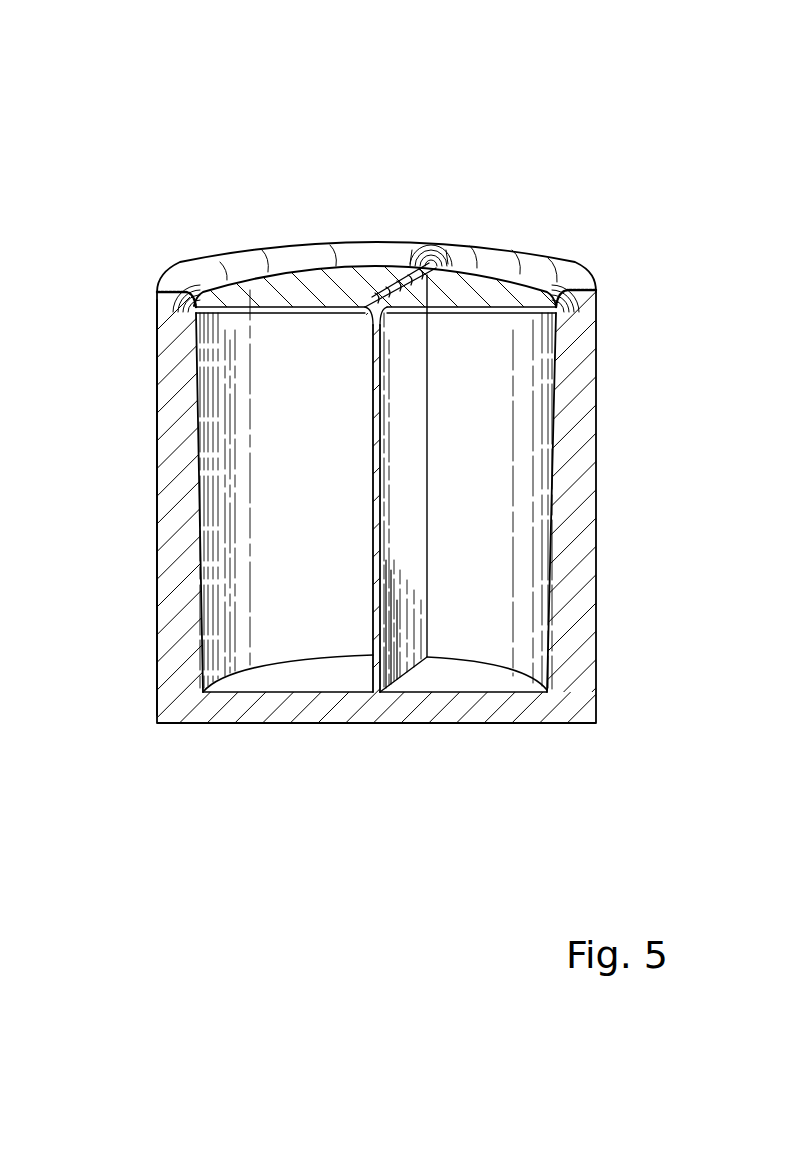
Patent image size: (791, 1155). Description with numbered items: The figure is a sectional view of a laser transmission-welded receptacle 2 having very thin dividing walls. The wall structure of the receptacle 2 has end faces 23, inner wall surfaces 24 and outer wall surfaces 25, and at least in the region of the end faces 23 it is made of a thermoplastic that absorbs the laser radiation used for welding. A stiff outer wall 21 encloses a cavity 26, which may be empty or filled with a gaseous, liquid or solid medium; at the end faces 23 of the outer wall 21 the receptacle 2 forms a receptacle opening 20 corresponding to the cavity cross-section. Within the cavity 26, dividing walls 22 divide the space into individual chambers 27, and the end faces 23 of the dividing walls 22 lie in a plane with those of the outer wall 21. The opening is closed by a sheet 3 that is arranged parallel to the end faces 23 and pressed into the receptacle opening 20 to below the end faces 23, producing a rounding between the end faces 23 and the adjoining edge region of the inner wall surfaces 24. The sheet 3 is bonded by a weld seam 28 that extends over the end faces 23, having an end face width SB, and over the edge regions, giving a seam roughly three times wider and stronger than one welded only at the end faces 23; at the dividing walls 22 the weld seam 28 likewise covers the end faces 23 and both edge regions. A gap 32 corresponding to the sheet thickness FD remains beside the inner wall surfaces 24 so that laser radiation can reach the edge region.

The receptacle 2 is at (599, 88).
The sheet 3 is at (307, 306).
The receptacle opening 20 is at (558, 307).
The outer wall 21 is at (157, 515).
The dividing walls 22 is at (373, 652).
The end faces 23 is at (396, 281).
The inner wall surfaces 24 is at (368, 385).
The outer wall surfaces 25 is at (154, 484).
The cavity 26 is at (465, 850).
The chambers 27 is at (270, 614).
The weld seam 28 is at (156, 284).
The gap 32 is at (190, 310).
The end face width SB is at (155, 290).
The sheet thickness FD is at (556, 307).